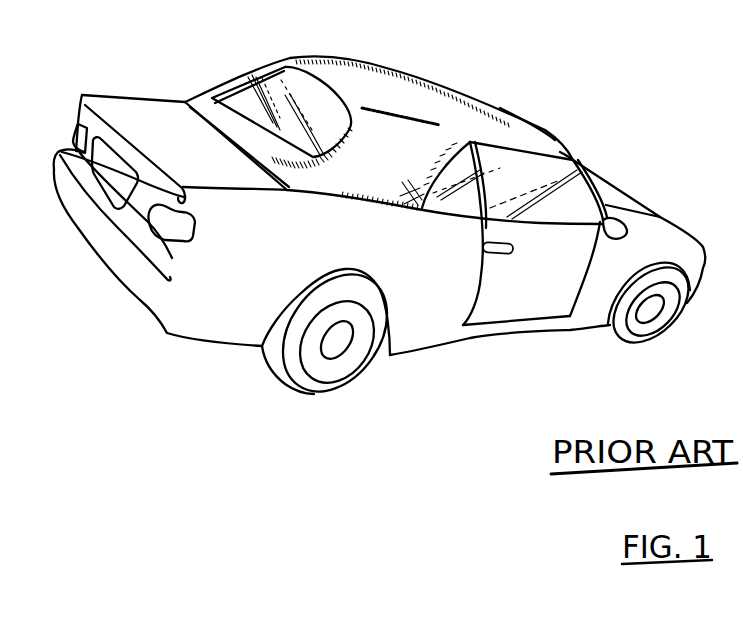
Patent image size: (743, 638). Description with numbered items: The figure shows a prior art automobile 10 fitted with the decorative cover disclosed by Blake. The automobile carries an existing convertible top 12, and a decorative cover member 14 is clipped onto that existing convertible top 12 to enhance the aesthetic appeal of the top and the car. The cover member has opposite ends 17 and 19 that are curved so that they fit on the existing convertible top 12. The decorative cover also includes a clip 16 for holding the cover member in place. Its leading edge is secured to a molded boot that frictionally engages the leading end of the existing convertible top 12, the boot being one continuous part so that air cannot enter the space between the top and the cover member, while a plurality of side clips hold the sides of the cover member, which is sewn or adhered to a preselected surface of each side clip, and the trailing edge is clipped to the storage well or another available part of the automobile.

The vehicle 10 is at (674, 154).
The existing convertible top 12 is at (622, 188).
The decorative cover member 14 is at (390, 72).
The clip 16 is at (543, 132).
The opposite end 17 is at (433, 84).
The opposite end 19 is at (573, 158).